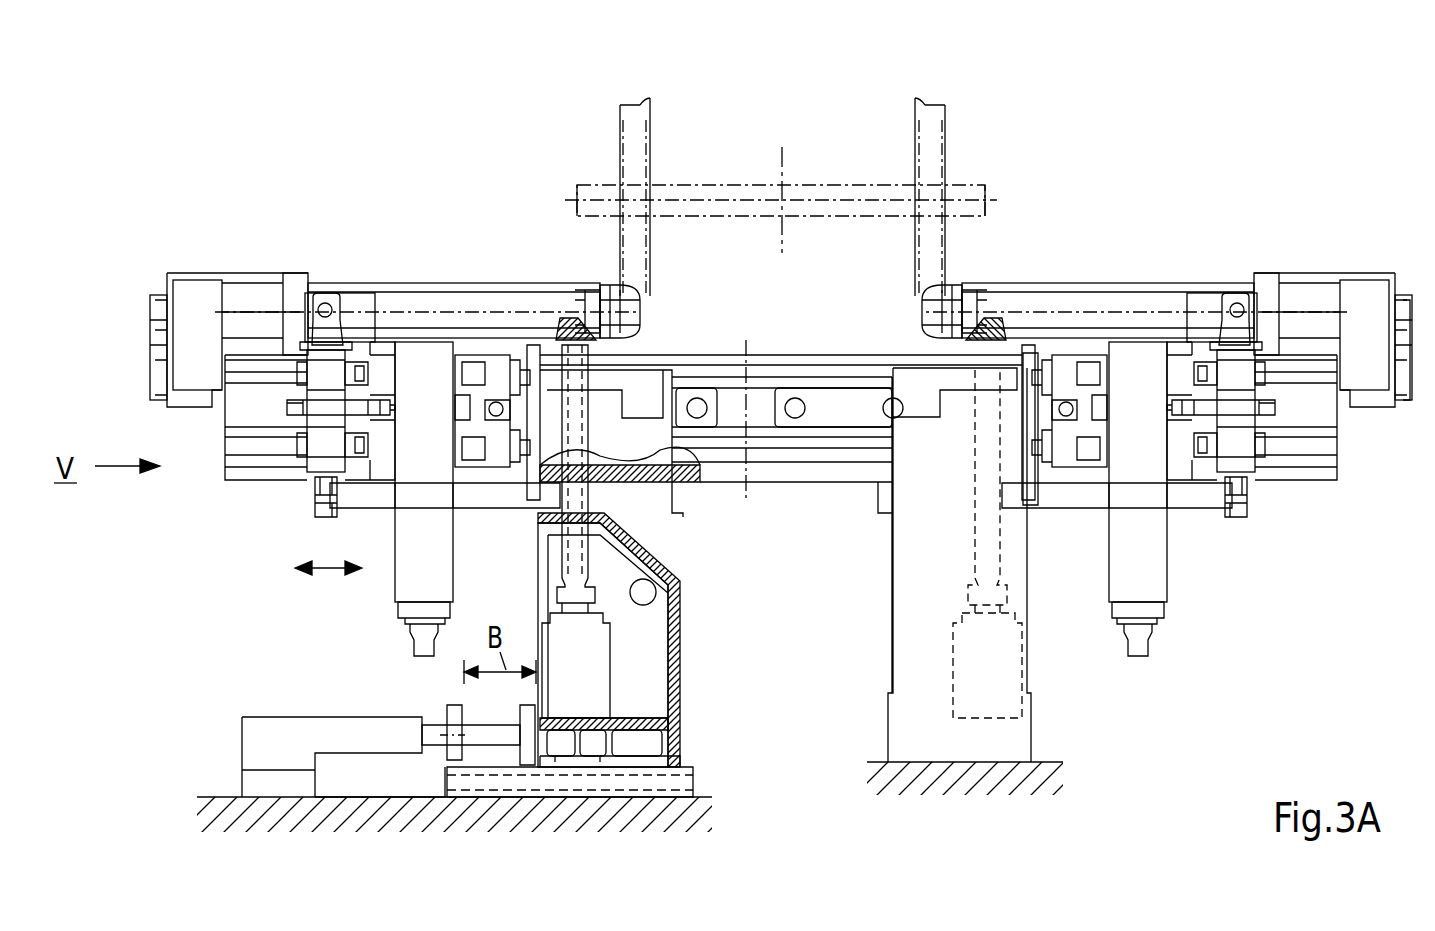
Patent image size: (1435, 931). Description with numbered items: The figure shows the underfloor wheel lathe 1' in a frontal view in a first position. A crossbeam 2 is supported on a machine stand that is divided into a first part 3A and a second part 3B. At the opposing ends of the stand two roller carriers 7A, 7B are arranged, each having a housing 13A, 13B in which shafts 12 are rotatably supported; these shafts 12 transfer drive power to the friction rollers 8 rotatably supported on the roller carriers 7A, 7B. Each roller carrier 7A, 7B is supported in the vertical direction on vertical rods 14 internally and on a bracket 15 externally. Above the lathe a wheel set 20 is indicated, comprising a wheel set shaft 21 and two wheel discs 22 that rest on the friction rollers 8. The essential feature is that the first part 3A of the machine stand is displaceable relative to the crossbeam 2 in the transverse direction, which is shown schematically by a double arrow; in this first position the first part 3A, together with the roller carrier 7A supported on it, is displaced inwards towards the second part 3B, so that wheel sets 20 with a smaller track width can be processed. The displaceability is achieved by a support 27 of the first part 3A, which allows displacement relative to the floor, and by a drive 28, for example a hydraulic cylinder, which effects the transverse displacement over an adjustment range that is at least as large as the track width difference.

The underfloor wheel lathe 1' is at (1337, 214).
The crossbeam 2 is at (811, 477).
The first part of the machine stand 3A is at (672, 659).
The second part of the machine stand 3B is at (913, 643).
The roller carrier 7A is at (397, 245).
The roller carrier 7B is at (1161, 245).
The friction roller 8 is at (632, 318).
The shaft 12 is at (463, 302).
The housing 13A is at (531, 293).
The housing 13B is at (1030, 293).
The vertical rod 14 is at (572, 510).
The bracket 15 is at (331, 291).
The wheel set 20 is at (824, 122).
The wheel set shaft 21 is at (740, 190).
The wheel disc 22 is at (630, 112).
The support 27 is at (634, 784).
The drive 28 is at (437, 733).